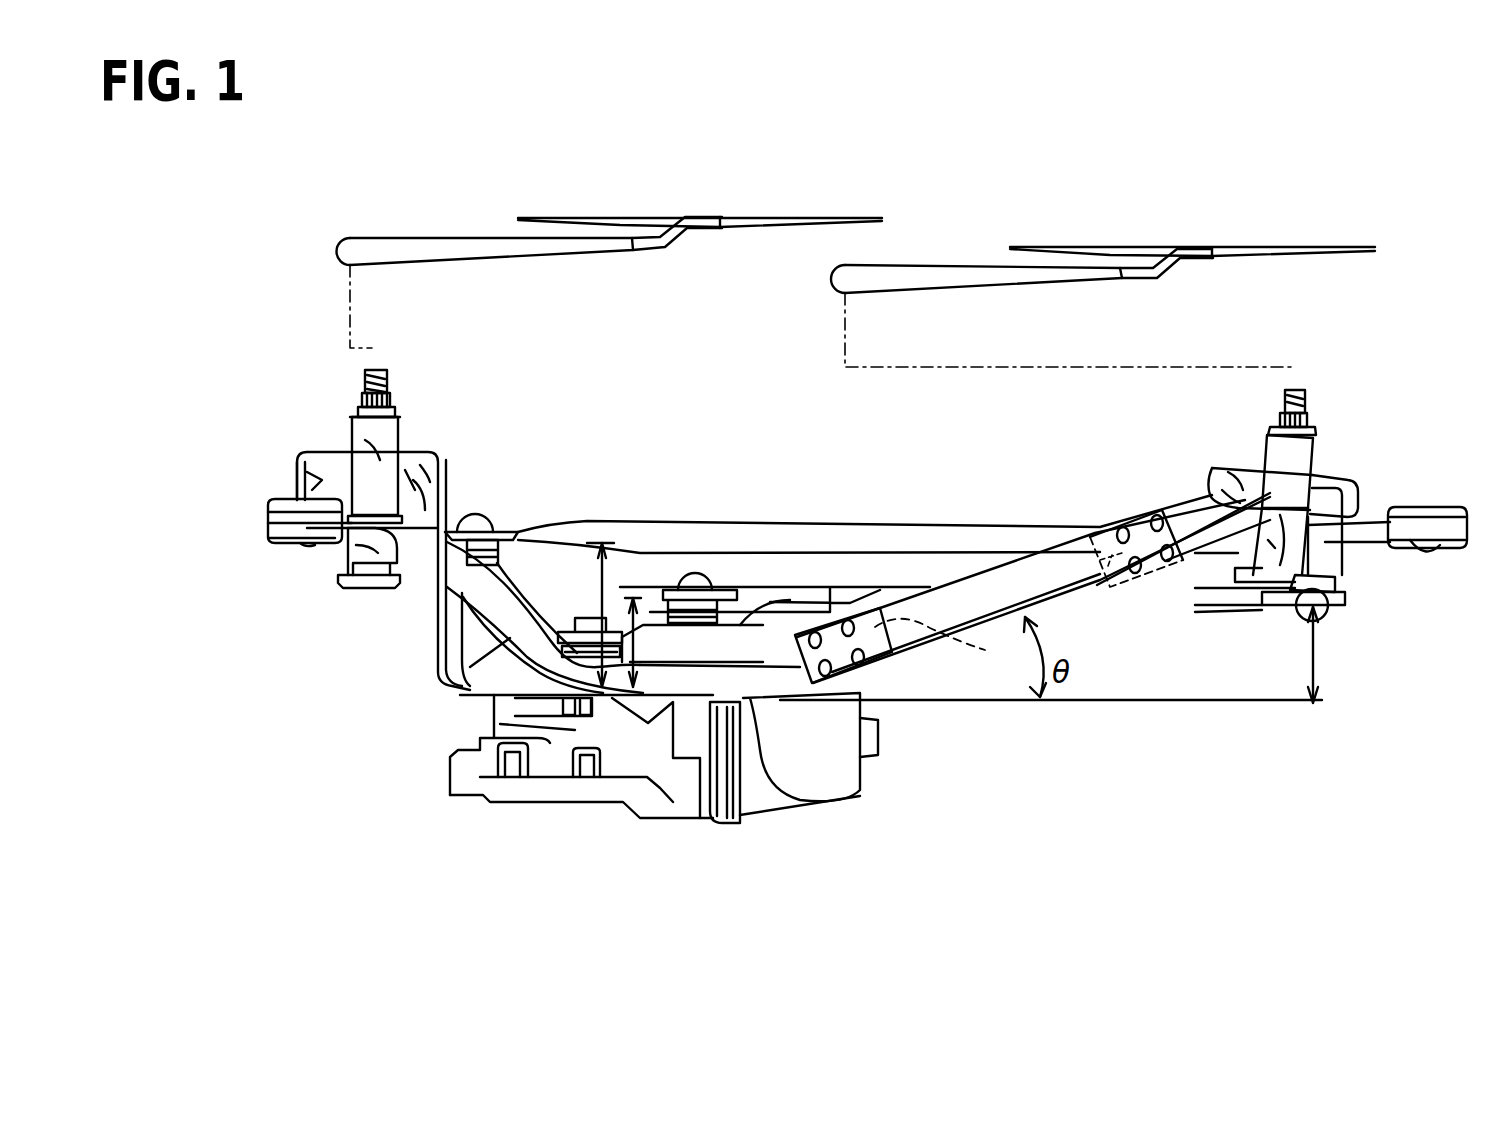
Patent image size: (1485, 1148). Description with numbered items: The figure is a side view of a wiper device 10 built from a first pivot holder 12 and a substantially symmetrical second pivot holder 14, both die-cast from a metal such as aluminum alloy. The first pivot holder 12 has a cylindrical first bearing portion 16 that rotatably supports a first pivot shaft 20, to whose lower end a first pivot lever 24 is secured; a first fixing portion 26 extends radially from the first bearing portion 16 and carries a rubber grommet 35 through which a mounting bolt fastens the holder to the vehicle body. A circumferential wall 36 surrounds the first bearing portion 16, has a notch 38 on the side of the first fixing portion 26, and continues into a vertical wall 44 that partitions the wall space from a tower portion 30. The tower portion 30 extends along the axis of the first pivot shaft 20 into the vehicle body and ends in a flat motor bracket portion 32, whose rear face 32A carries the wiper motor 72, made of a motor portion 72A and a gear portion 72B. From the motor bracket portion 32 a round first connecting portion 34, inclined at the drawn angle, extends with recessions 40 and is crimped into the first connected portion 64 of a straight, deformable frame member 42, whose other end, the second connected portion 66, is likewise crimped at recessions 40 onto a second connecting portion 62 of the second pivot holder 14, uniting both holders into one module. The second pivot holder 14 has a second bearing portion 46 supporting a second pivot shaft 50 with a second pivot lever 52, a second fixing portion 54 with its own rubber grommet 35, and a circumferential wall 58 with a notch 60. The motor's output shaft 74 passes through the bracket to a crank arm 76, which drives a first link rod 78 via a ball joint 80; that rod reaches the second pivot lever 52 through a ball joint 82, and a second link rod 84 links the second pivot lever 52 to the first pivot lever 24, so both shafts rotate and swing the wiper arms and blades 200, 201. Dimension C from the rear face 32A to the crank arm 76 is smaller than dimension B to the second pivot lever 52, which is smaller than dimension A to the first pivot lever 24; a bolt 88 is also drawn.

The wiper device 10 is at (848, 422).
The first pivot holder 12 is at (420, 448).
The second pivot holder 14 is at (1232, 445).
The first bearing portion 16 is at (352, 433).
The first pivot shaft 20 is at (375, 370).
The first pivot lever 24 is at (397, 593).
The first fixing portion 26 is at (268, 518).
The tower portion 30 is at (467, 685).
The motor bracket portion 32 is at (664, 824).
The rear face 32A is at (807, 798).
The first connecting portion 34 is at (990, 651).
The rubber grommet 35 is at (300, 546).
The circumferential wall 36 is at (425, 472).
The notch 38 is at (297, 478).
The recessions 40 is at (852, 607).
The frame member 42 is at (990, 587).
The vertical wall 44 is at (440, 648).
The second bearing portion 46 is at (1270, 447).
The second pivot shaft 50 is at (1296, 390).
The second pivot lever 52 is at (1263, 578).
The second fixing portion 54 is at (1442, 545).
The circumferential wall 58 is at (1215, 466).
The notch 60 is at (1313, 490).
The second connecting portion 62 is at (1090, 587).
The first connected portion 64 is at (843, 674).
The second connected portion 66 is at (1183, 527).
The wiper motor 72 is at (676, 927).
The motor portion 72A is at (773, 810).
The gear portion 72B is at (577, 808).
The output shaft 74 is at (587, 617).
The crank arm 76 is at (657, 627).
The first link rod 78 is at (800, 585).
The ball joint 80 is at (700, 570).
The ball joint 82 is at (1327, 607).
The second link rod 84 is at (908, 525).
The bolt 88 is at (478, 517).
The wiper arm and wiper blade 200 is at (712, 207).
The wiper arm and wiper blade 201 is at (1150, 238).
The dimension A is at (585, 540).
The dimension B is at (1317, 643).
The dimension C is at (627, 625).